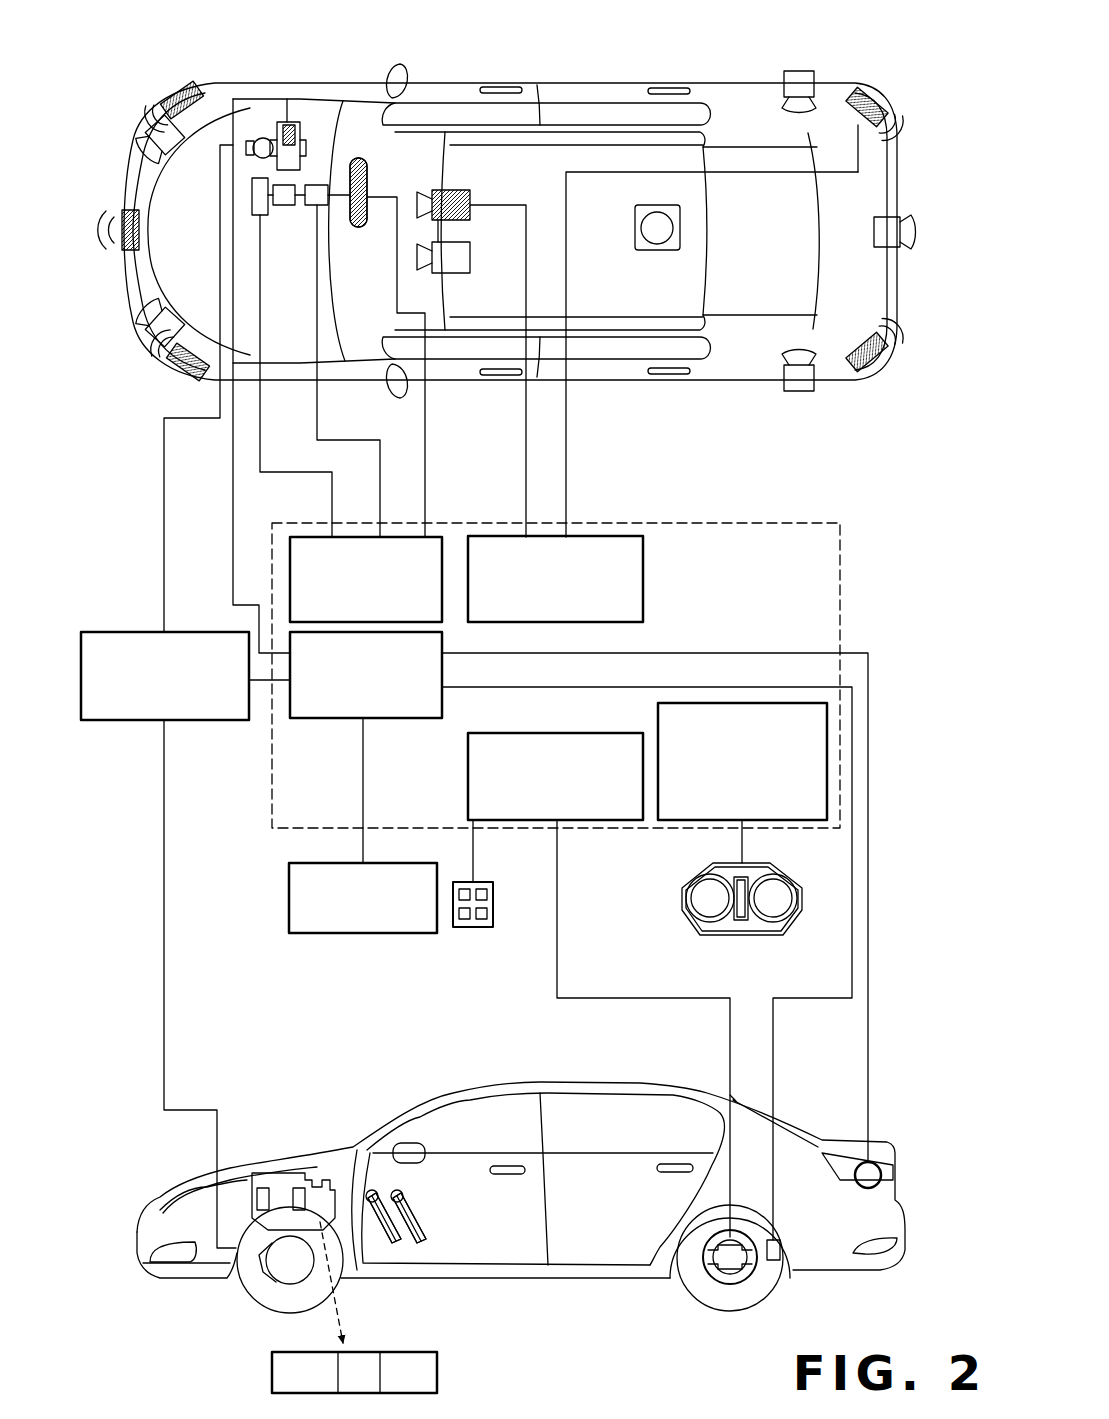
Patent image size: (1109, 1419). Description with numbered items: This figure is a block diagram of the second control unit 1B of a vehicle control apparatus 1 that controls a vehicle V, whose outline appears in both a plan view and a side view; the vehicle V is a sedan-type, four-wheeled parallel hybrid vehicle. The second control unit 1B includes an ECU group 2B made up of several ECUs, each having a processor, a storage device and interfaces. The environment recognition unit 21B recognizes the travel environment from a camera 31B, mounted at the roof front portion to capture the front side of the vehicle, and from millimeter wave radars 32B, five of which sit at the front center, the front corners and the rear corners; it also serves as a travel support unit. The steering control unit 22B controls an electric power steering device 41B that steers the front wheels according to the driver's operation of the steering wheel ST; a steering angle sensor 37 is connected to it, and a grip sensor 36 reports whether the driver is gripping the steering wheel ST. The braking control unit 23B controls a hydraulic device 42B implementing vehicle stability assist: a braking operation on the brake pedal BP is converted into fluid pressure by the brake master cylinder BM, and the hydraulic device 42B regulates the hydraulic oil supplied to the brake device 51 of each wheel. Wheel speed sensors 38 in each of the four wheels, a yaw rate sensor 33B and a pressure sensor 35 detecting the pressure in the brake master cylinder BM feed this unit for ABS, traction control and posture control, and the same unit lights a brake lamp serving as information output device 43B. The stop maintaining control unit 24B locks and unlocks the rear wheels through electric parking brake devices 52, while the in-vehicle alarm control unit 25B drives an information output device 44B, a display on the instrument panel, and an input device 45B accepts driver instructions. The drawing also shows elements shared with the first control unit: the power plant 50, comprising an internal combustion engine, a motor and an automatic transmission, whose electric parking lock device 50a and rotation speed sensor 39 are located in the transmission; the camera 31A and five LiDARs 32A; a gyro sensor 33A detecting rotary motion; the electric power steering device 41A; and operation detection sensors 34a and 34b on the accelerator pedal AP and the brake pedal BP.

The vehicle control apparatus 1 is at (927, 380).
The second control unit 1B is at (908, 502).
The ECU group 2B is at (477, 520).
The vehicle V is at (912, 112).
The environment recognition unit 21B is at (595, 536).
The steering control unit 22B is at (310, 537).
The braking control unit 23B is at (312, 718).
The stop maintaining control unit 24B is at (468, 782).
The in-vehicle alarm control unit 25B is at (685, 822).
The camera 31A is at (455, 274).
The camera 31B is at (458, 188).
The LiDAR 32A is at (178, 152).
The millimeter wave radar 32B is at (198, 88).
The gyro sensor 33A is at (650, 252).
The yaw rate sensor 33B is at (345, 935).
The operation detection sensor 34a is at (372, 1190).
The operation detection sensor 34b is at (403, 1192).
The pressure sensor 35 is at (288, 122).
The grip sensor 36 is at (365, 192).
The steering angle sensor 37 is at (260, 215).
The wheel speed sensor 38 is at (780, 1262).
The rotation speed sensor 39 is at (298, 1186).
The electric power steering device 41A is at (282, 205).
The electric power steering device 41B is at (318, 183).
The hydraulic device 42B is at (128, 630).
The information output device 43B is at (882, 1175).
The information output device 44B is at (693, 933).
The input device 45B is at (473, 927).
The power plant 50 is at (322, 1182).
The electric parking lock device 50a is at (255, 1175).
The brake device 51 is at (270, 1278).
The electric parking brake device 52 is at (722, 1278).
The accelerator pedal AP is at (398, 1243).
The brake pedal BP is at (423, 1243).
The brake master cylinder BM is at (298, 128).
The steering wheel ST is at (365, 164).